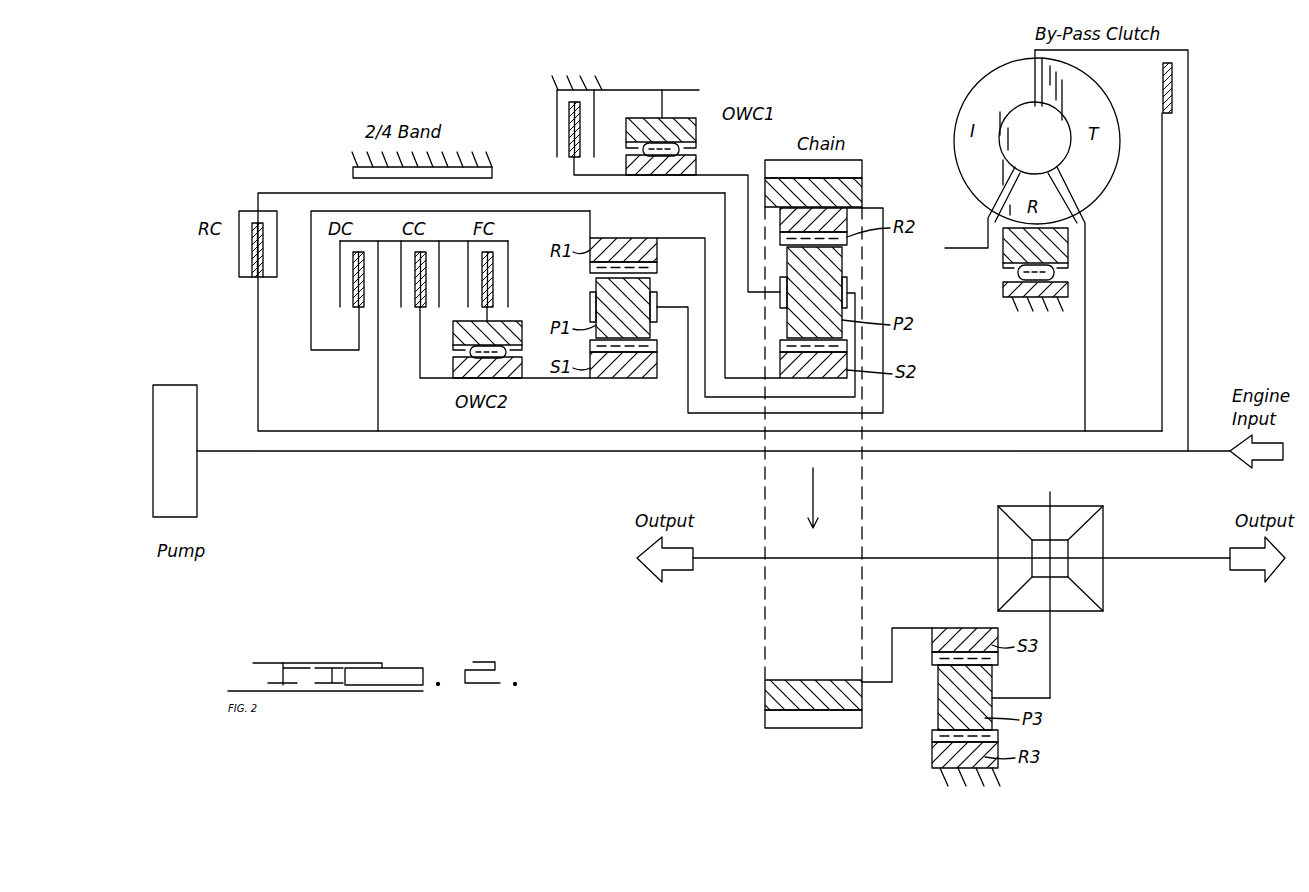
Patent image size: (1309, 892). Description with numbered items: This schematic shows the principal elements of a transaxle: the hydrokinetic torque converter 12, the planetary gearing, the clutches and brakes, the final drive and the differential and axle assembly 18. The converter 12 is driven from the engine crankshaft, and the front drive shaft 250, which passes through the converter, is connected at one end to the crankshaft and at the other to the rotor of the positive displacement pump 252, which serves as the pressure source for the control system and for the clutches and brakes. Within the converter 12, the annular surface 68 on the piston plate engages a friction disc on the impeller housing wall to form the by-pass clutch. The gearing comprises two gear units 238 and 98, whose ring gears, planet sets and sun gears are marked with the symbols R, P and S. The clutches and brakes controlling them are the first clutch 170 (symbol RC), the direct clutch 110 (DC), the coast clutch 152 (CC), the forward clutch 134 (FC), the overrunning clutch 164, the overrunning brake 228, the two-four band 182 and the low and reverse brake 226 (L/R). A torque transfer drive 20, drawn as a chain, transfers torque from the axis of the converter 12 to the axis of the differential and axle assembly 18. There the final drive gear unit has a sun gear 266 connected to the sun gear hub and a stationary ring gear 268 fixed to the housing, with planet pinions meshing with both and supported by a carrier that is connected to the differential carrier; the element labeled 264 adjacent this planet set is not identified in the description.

The hydrokinetic torque converter 12 is at (977, 82).
The final drive and differential and axle assembly 18 is at (1113, 527).
The torque transfer drive 20 is at (855, 170).
The annular surface 68 is at (1165, 168).
The gear unit 98 is at (855, 224).
The direct clutch 110 is at (353, 292).
The forward clutch 134 is at (492, 265).
The coast clutch 152 is at (420, 307).
The overrunning clutch 164 is at (513, 372).
The first clutch 170 is at (252, 260).
The 2-4 band 182 is at (353, 172).
The low and reverse brake 226 is at (569, 122).
The overrunning brake 228 is at (665, 155).
The gear unit 238 is at (613, 250).
The front drive shaft 250 is at (500, 453).
The positive displacement pump 252 is at (180, 392).
The carrier of third gear unit 264 is at (1052, 692).
The sun gear 266 is at (950, 632).
The ring gear 268 is at (932, 762).